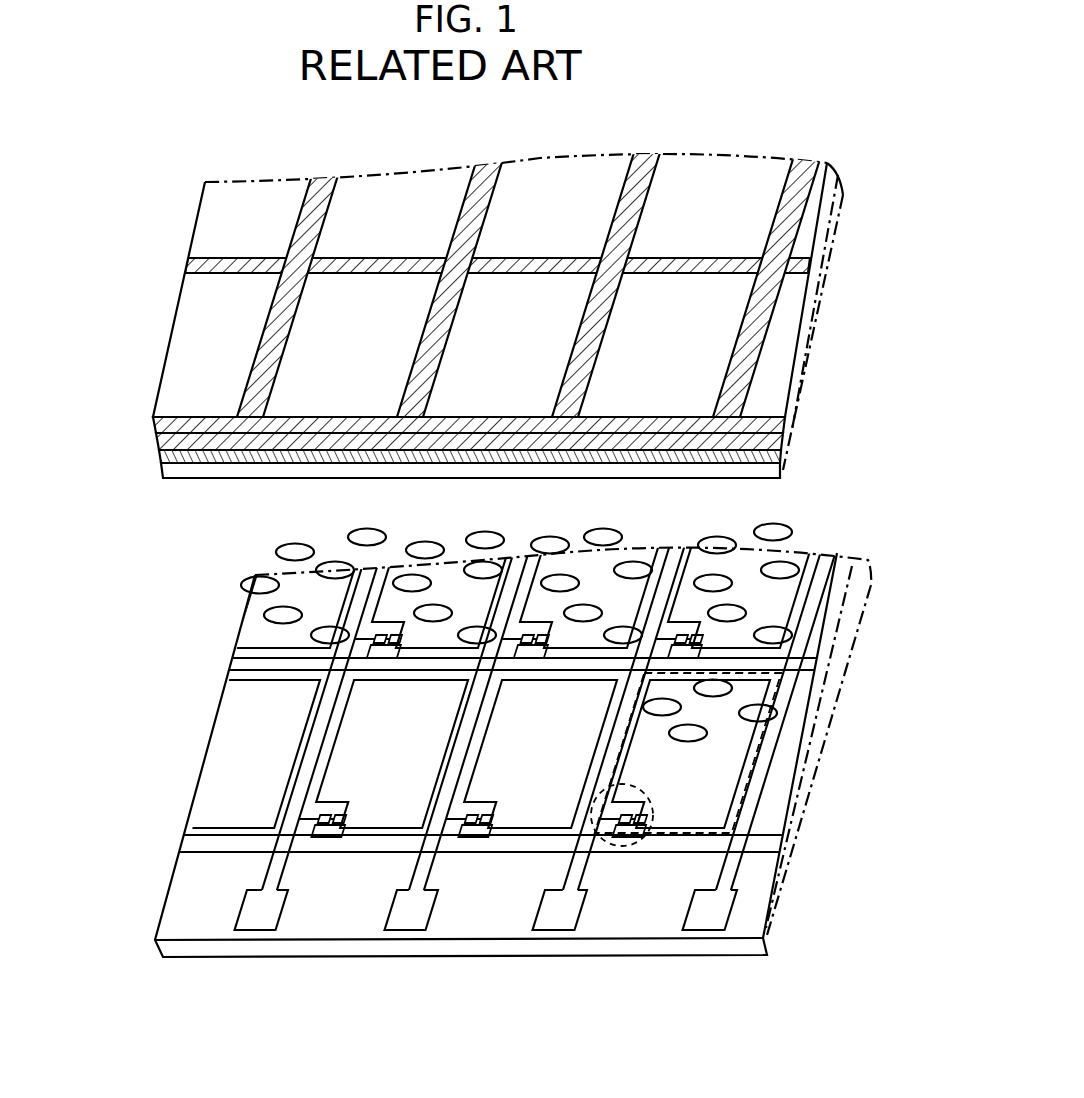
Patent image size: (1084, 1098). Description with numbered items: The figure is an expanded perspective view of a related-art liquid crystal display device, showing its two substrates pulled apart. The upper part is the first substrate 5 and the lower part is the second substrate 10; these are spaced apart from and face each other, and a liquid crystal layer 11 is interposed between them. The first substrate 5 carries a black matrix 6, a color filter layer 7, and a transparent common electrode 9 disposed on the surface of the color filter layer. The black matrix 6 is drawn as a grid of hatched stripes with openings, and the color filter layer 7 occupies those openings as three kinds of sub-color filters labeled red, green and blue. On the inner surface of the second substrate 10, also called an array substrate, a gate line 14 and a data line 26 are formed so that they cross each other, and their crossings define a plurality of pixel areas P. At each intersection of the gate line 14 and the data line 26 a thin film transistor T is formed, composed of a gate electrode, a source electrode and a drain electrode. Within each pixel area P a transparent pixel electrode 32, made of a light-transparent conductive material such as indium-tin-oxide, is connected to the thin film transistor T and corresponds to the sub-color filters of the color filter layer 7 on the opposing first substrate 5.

The first substrate 5 is at (153, 437).
The black matrix 6 is at (823, 266).
The color filter layer 7 is at (753, 219).
The transparent common electrode 9 is at (781, 476).
The second substrate 10 is at (722, 947).
The liquid crystal layer 11 is at (782, 630).
The gate line 14 is at (743, 850).
The data line 26 is at (562, 877).
The transparent pixel electrode 32 is at (727, 800).
The pixel area P is at (757, 743).
The thin film transistor T is at (640, 840).